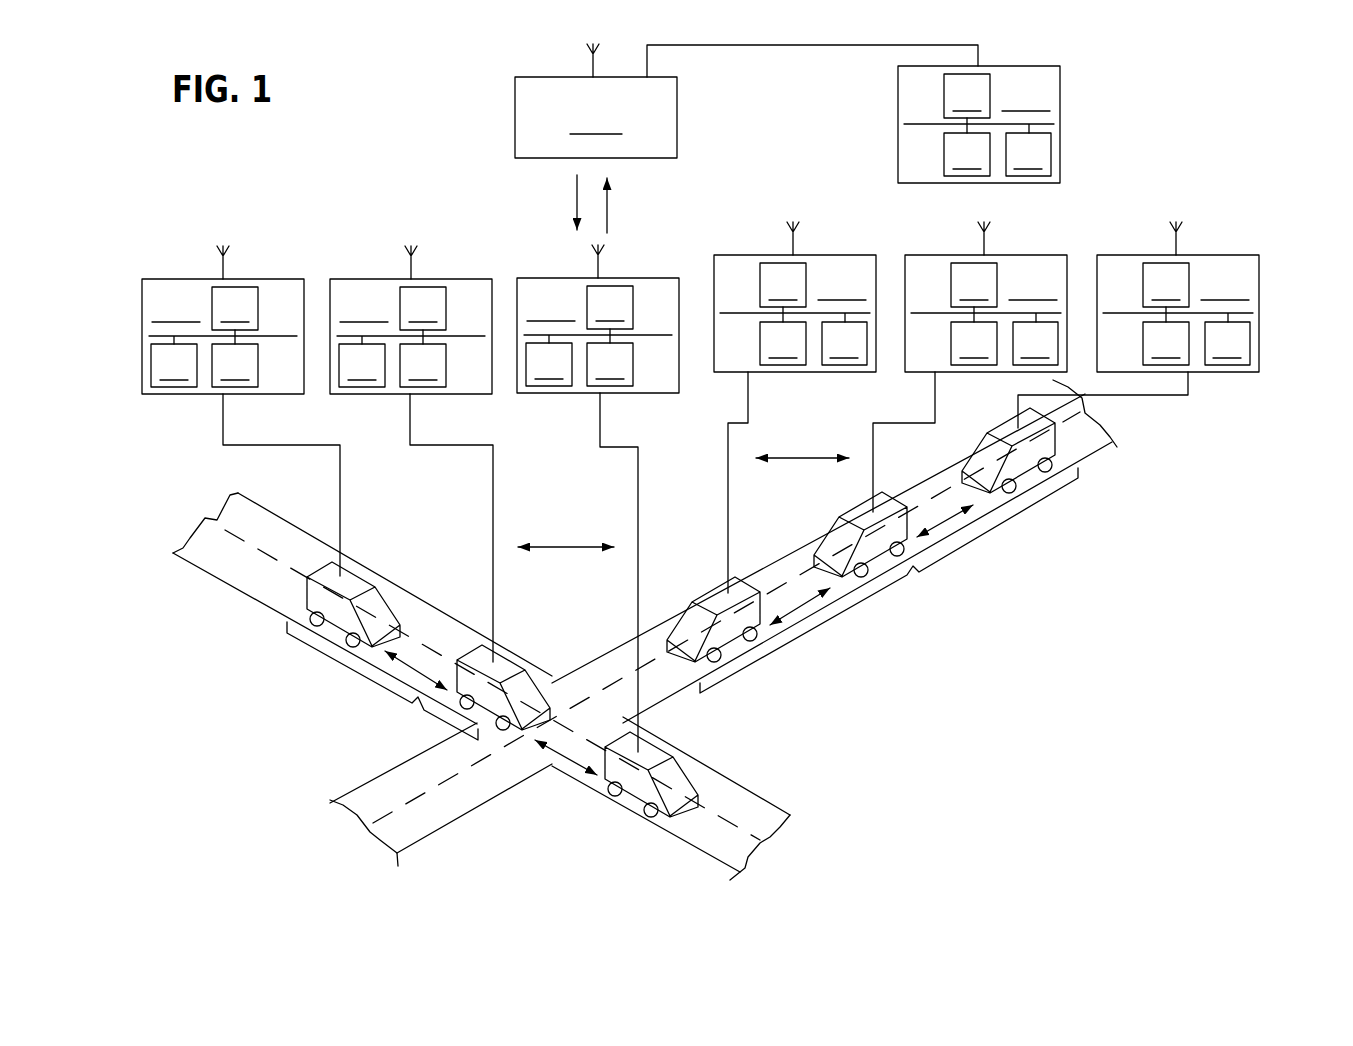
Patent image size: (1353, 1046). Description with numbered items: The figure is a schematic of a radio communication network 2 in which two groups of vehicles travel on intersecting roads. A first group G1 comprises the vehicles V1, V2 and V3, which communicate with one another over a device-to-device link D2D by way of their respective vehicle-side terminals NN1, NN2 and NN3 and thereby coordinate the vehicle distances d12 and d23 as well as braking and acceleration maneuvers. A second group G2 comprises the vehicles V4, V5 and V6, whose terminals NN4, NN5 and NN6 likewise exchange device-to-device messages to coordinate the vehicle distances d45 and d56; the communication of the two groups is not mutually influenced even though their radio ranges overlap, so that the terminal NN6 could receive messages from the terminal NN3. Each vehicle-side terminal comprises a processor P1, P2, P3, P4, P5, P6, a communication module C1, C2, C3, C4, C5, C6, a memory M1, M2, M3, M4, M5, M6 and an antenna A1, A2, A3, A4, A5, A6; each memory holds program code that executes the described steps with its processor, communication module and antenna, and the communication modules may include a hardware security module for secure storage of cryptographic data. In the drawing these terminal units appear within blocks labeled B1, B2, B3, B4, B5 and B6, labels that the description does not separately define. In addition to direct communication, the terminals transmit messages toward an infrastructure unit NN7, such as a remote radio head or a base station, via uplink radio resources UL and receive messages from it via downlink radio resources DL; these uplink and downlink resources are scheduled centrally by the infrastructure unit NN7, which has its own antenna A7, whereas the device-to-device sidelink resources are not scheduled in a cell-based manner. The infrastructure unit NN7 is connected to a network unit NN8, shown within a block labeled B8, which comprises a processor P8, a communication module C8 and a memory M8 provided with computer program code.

The radio communication network 2 is at (388, 190).
The antenna A1 is at (593, 268).
The antenna A2 is at (406, 268).
The antenna A3 is at (218, 268).
The antenna A4 is at (795, 249).
The antenna A5 is at (987, 249).
The antenna A6 is at (1179, 249).
The antenna A7 is at (585, 62).
The communication device B1 is at (598, 363).
The communication device B2 is at (411, 313).
The communication device B3 is at (223, 313).
The communication device B4 is at (795, 292).
The communication device B5 is at (986, 292).
The communication device B6 is at (1178, 292).
The communication device B8 is at (949, 124).
The vehicle-side terminal NN1 is at (551, 309).
The vehicle-side terminal NN2 is at (364, 310).
The vehicle-side terminal NN3 is at (176, 310).
The vehicle-side terminal NN4 is at (842, 288).
The vehicle-side terminal NN5 is at (1033, 288).
The vehicle-side terminal NN6 is at (1225, 288).
The infrastructure unit NN7 is at (746, 101).
The network unit NN8 is at (1026, 99).
The communication module C1 is at (610, 307).
The communication module C2 is at (423, 308).
The communication module C3 is at (235, 308).
The communication module C4 is at (783, 285).
The communication module C5 is at (974, 285).
The communication module C6 is at (1166, 285).
The communication module C8 is at (967, 96).
The memory M1 is at (549, 364).
The memory M2 is at (362, 365).
The memory M3 is at (174, 365).
The memory M4 is at (844, 343).
The memory M5 is at (1035, 343).
The memory M6 is at (1227, 343).
The memory M8 is at (1028, 154).
The processor P1 is at (610, 364).
The processor P2 is at (423, 365).
The processor P3 is at (235, 365).
The processor P4 is at (783, 343).
The processor P5 is at (974, 343).
The processor P6 is at (1166, 343).
The processor P8 is at (967, 154).
The downlink radio resources DL is at (557, 202).
The uplink radio resources UL is at (626, 205).
The device-to-device radio resource D2D is at (578, 542).
The vehicle V1 is at (675, 770).
The vehicle V2 is at (508, 664).
The vehicle V3 is at (326, 567).
The vehicle V4 is at (717, 602).
The vehicle V5 is at (851, 578).
The vehicle V6 is at (1048, 458).
The first group of vehicles G1 is at (382, 686).
The second group of vehicles G2 is at (889, 580).
The vehicle distance d12 is at (565, 762).
The vehicle distance d23 is at (405, 663).
The vehicle distance d45 is at (803, 603).
The vehicle distance d56 is at (948, 522).